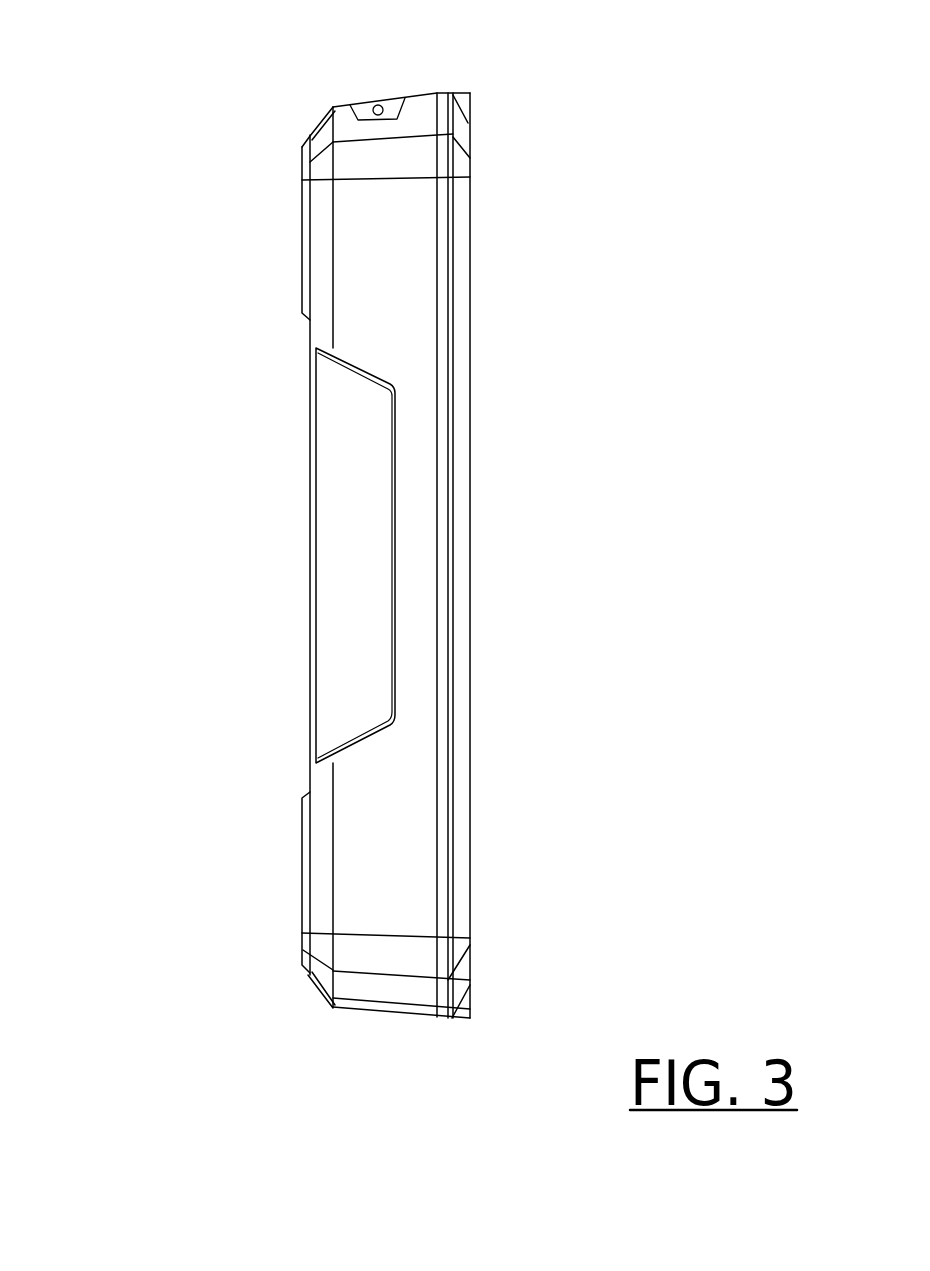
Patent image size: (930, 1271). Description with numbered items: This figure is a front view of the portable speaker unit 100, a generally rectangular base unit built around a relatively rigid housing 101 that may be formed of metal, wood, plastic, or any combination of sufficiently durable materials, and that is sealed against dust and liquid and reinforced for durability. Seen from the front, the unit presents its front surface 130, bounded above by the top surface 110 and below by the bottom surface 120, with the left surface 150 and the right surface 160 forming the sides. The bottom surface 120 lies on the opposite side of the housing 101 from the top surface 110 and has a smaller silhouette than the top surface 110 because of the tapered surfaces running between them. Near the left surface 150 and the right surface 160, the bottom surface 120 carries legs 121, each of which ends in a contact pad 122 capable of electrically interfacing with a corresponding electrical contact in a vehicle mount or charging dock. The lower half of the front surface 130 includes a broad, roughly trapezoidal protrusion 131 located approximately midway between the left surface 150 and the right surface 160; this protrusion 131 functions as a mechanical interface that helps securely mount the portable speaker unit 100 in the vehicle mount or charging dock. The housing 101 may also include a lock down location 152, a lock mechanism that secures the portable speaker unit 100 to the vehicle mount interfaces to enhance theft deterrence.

The portable speaker unit 100 is at (305, 122).
The housing 101 is at (462, 633).
The top surface 110 is at (472, 325).
The bottom surface 120 is at (308, 490).
The legs 121 is at (305, 239).
The contact pad 122 is at (302, 190).
The front surface 130 is at (365, 858).
The protrusion 131 is at (340, 688).
The left surface 150 is at (425, 92).
The lock down location 152 is at (381, 102).
The right surface 160 is at (391, 1013).